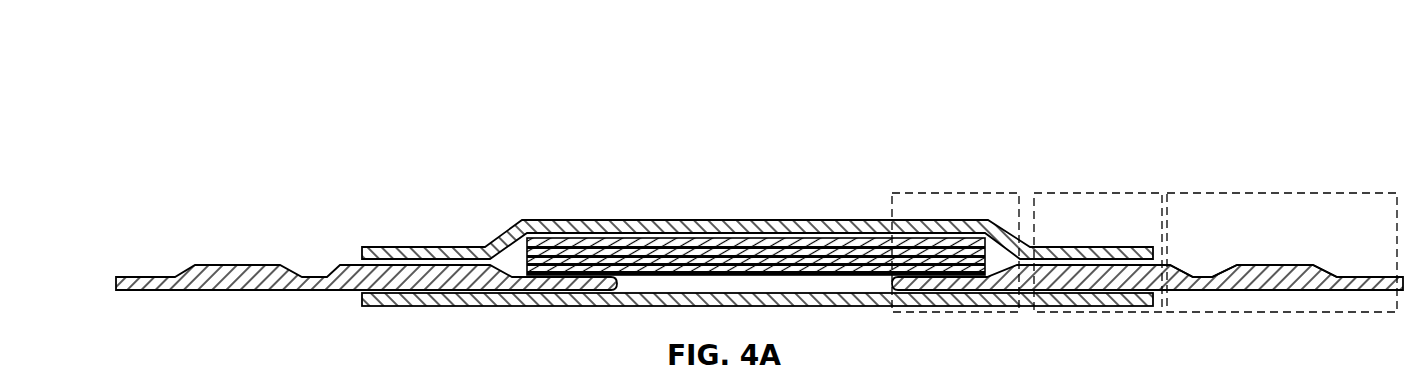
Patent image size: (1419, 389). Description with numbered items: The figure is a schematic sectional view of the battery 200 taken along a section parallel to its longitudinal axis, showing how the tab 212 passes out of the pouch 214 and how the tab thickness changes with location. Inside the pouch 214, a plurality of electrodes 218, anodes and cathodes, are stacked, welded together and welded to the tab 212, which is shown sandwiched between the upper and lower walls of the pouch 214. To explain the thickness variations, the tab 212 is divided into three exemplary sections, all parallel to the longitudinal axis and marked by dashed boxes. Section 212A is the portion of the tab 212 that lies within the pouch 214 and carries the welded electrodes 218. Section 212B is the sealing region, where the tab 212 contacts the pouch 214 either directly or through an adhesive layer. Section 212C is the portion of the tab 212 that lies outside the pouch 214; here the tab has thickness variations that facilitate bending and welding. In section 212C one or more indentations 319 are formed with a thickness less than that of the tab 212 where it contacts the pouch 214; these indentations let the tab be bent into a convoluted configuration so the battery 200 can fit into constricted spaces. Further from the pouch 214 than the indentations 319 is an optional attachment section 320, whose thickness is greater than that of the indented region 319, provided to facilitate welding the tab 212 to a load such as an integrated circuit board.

The battery 200 is at (1266, 46).
The tab 212 is at (232, 254).
The section 212A of the tab 212A is at (968, 191).
The section 212B of the tab 212B is at (1110, 191).
The section 212C of the tab 212C is at (1242, 191).
The pouch 214 is at (562, 227).
The electrodes 218 is at (650, 240).
The indentation 319 is at (1203, 273).
The attachment section 320 is at (1342, 277).